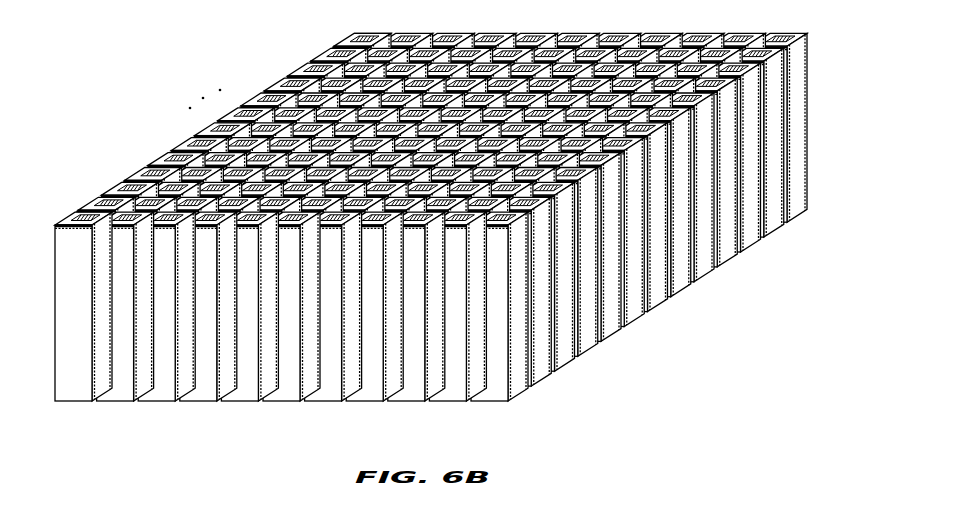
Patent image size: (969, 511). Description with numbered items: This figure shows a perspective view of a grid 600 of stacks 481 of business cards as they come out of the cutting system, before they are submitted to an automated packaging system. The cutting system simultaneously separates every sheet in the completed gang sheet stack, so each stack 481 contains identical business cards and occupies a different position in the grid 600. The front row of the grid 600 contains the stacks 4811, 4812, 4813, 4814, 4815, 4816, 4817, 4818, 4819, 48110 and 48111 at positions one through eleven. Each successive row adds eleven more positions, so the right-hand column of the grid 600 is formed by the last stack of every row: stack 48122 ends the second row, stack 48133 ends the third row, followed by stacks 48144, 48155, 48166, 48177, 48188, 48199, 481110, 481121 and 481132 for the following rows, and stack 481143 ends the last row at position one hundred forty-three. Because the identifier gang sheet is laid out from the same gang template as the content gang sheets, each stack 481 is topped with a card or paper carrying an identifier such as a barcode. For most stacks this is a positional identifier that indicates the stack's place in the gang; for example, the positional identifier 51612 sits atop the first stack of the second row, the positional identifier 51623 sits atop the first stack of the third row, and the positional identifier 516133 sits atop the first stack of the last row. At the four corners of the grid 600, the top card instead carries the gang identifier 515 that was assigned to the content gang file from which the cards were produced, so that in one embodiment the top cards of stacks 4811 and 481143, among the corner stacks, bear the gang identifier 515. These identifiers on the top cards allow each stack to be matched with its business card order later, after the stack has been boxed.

The grid 600 is at (450, 224).
The stacks of business cards 481 is at (460, 238).
The gang identifier 515 is at (75, 212).
The stack of business cards at position one 4811 is at (70, 402).
The stack of business cards at position two 4812 is at (112, 402).
The stack of business cards at position three 4813 is at (153, 402).
The stack of business cards at position four 4814 is at (195, 402).
The stack of business cards at position five 4815 is at (236, 402).
The stack of business cards at position six 4816 is at (278, 402).
The stack of business cards at position seven 4817 is at (320, 402).
The stack of business cards at position eight 4818 is at (361, 402).
The stack of business cards at position nine 4819 is at (403, 402).
The stack of business cards at position ten 48110 is at (444, 402).
The stack of business cards at position eleven 48111 is at (486, 402).
The stack of business cards at position twenty-two 48122 is at (545, 377).
The stack of business cards at position thirty-three 48133 is at (568, 362).
The stack of business cards at position forty-four 48144 is at (592, 347).
The stack of business cards at position fifty-five 48155 is at (615, 332).
The stack of business cards at position sixty-six 48166 is at (638, 318).
The stack of business cards at position seventy-seven 48177 is at (662, 303).
The stack of business cards at position eighty-eight 48188 is at (685, 288).
The stack of business cards at position ninety-nine 48199 is at (708, 273).
The stack of business cards at position one hundred ten 481110 is at (731, 258).
The stack of business cards at position one hundred twenty-one 481121 is at (754, 243).
The stack of business cards at position one hundred thirty-two 481132 is at (778, 228).
The stack of business cards at position one hundred forty-three 481143 is at (801, 213).
The position identifier for position twelve 51612 is at (99, 197).
The position identifier for position twenty-three 51623 is at (122, 182).
The position identifier for position one hundred thirty-three 516133 is at (333, 50).